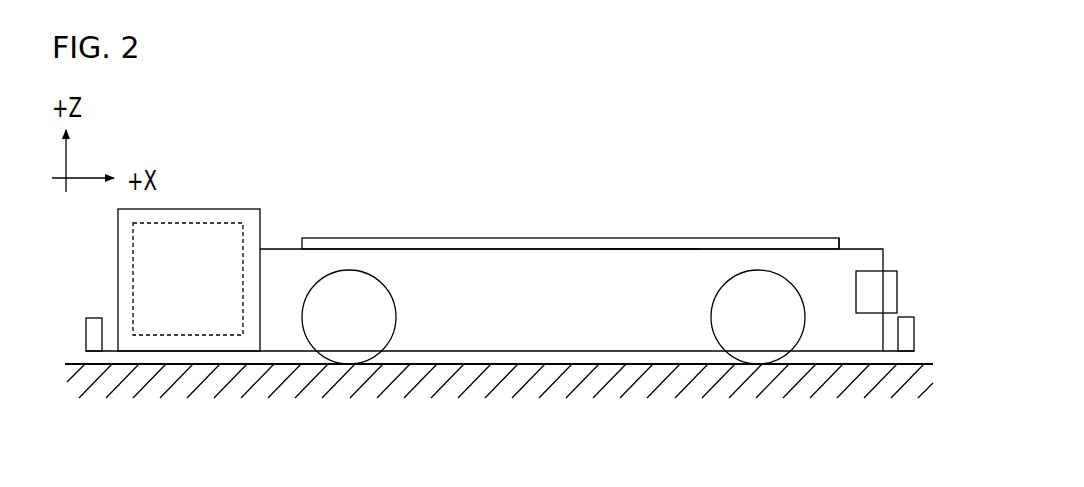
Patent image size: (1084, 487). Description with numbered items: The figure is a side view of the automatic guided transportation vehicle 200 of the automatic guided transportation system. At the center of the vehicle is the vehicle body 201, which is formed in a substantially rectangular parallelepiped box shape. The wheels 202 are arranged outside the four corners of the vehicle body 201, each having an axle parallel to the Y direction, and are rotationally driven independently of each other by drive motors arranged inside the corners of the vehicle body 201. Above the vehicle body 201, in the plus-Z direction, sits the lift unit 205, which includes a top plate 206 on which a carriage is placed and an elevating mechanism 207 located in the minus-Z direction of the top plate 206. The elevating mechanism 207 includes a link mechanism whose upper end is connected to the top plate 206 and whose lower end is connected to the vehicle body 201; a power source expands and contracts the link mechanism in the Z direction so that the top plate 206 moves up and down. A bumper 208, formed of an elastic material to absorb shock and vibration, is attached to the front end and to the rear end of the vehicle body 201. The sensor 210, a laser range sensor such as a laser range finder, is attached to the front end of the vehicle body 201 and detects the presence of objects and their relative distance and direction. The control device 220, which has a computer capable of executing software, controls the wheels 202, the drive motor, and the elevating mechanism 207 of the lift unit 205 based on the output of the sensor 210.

The automatic guided transportation vehicle 200 is at (507, 285).
The vehicle body 201 is at (434, 270).
The wheels 202 is at (343, 352).
The lift unit 205 is at (806, 226).
The top plate 206 is at (757, 243).
The elevating mechanism 207 is at (640, 268).
The bumper 208 is at (93, 326).
The sensor 210 is at (892, 290).
The control device 220 is at (220, 238).